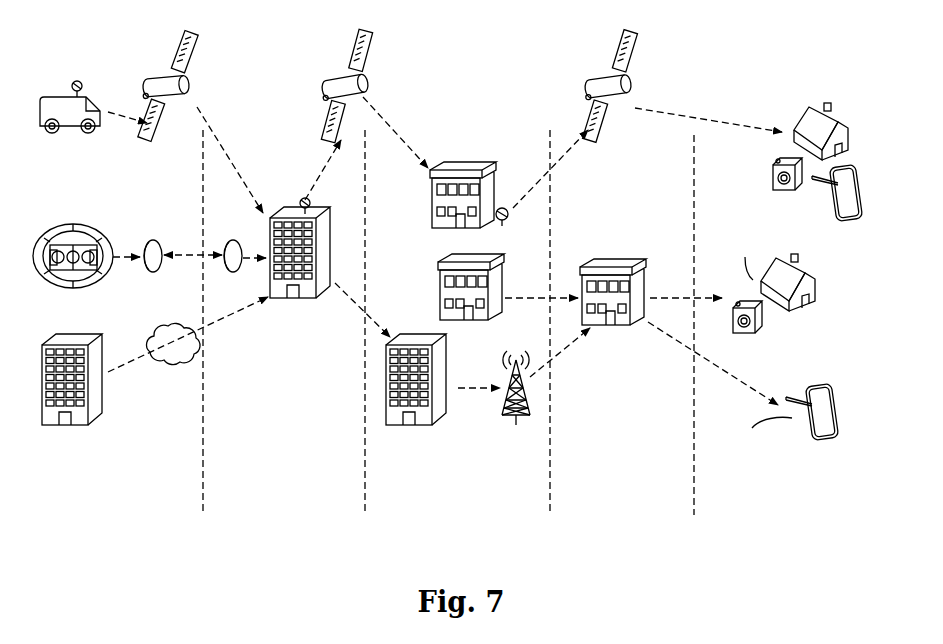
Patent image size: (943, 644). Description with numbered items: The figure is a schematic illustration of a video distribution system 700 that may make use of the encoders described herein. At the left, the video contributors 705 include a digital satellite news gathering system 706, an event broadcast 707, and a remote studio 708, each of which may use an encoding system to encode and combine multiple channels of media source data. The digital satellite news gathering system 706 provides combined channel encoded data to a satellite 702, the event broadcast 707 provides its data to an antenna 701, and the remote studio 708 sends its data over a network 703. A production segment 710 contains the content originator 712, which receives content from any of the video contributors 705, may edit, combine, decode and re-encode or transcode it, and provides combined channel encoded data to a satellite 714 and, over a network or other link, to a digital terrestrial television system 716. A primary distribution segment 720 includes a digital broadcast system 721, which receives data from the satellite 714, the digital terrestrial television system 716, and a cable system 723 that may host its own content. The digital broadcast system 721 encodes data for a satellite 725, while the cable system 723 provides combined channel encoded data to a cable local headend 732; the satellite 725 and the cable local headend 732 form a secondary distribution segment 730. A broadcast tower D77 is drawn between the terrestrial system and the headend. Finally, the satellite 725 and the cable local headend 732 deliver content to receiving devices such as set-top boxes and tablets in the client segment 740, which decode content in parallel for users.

The video distribution system 700 is at (739, 38).
The antenna 701 is at (157, 240).
The satellite 702 is at (188, 45).
The network 703 is at (186, 364).
The video contributors 705 is at (125, 512).
The digital satellite news gathering system 706 is at (64, 90).
The event broadcast 707 is at (70, 225).
The remote studio 708 is at (80, 430).
The production segment 710 is at (286, 512).
The content originator 712 is at (297, 200).
The satellite 714 is at (365, 43).
The digital terrestrial television system 716 is at (412, 334).
The primary distribution segment 720 is at (447, 512).
The digital broadcast system 721 is at (490, 170).
The cable system 723 is at (502, 285).
The satellite 725 is at (628, 45).
The secondary distribution segment 730 is at (610, 512).
The cable local headend 732 is at (635, 265).
The client segment 740 is at (772, 512).
The broadcast tower D77 is at (518, 425).